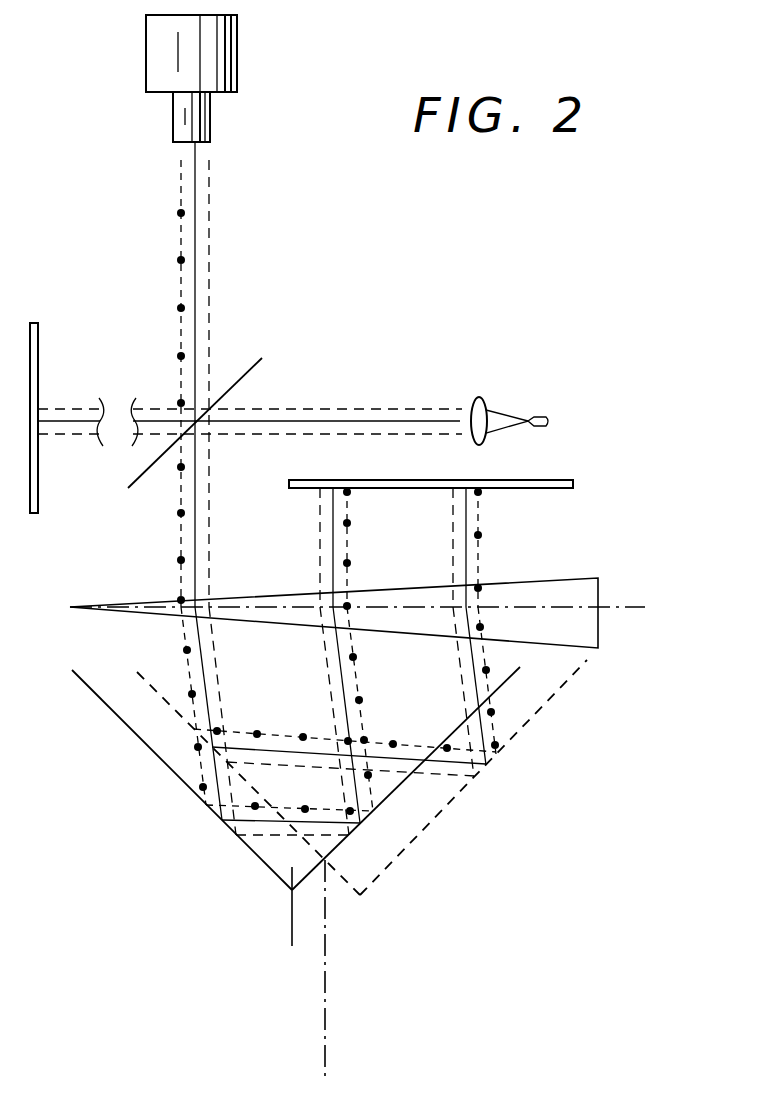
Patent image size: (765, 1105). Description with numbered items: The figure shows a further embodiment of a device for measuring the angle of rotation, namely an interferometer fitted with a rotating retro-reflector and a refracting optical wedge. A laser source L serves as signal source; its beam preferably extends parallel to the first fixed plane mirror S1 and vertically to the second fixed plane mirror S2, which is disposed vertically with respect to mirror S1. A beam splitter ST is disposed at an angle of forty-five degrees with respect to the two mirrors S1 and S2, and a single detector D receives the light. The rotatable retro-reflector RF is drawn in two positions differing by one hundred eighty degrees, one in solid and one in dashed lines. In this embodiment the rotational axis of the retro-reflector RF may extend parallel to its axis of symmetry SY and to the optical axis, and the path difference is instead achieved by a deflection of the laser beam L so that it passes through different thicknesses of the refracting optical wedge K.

The laser source L is at (237, 58).
The first fixed plane mirror S1 is at (38, 324).
The beam splitter ST is at (262, 358).
The detector D is at (548, 421).
The second fixed plane mirror S2 is at (573, 484).
The refracting optical wedge K is at (598, 648).
The rotatable retro-reflector RF is at (110, 708).
The axis of symmetry SY is at (292, 904).